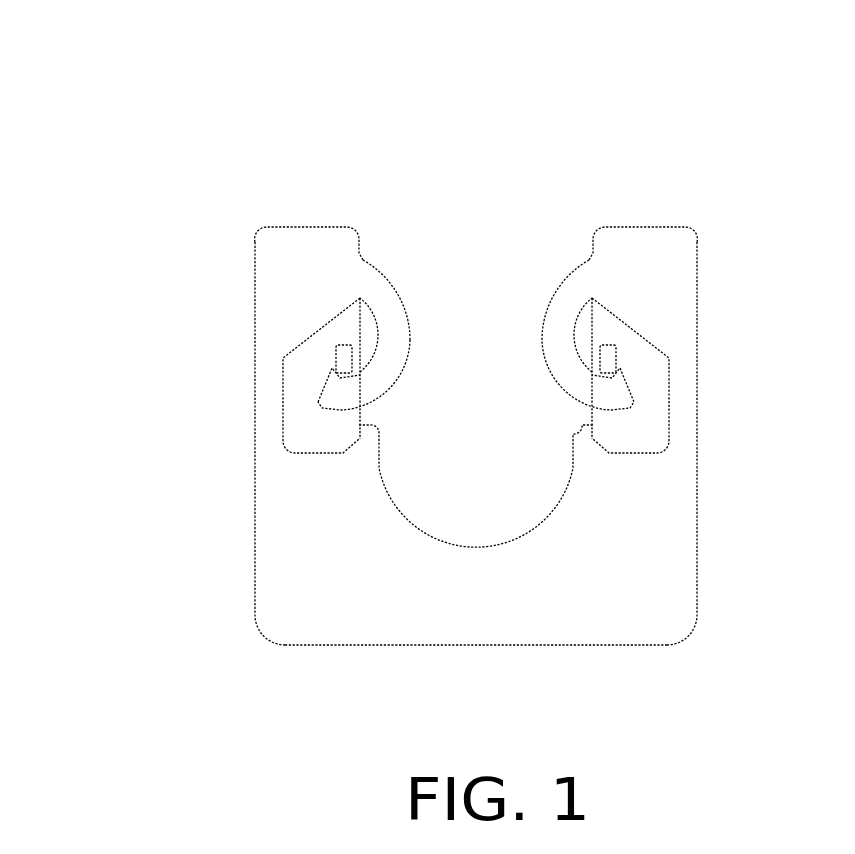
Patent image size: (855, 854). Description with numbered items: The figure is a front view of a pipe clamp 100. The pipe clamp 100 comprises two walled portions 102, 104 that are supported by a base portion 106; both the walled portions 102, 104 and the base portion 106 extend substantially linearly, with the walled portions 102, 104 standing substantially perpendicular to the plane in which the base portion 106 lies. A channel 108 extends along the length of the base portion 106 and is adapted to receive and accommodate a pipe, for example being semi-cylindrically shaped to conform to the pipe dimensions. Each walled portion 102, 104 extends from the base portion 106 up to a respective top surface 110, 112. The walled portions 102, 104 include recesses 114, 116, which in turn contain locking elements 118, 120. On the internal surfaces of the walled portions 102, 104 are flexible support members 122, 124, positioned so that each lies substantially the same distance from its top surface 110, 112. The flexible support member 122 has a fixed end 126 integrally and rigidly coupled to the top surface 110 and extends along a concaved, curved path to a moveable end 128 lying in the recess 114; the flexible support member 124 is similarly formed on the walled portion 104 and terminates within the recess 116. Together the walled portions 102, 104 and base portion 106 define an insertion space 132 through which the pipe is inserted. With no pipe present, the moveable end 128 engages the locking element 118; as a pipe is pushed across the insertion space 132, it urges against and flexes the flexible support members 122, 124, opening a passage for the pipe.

The pipe clamp 100 is at (141, 61).
The walled portion 102 is at (255, 287).
The walled portion 104 is at (697, 472).
The base portion 106 is at (597, 645).
The channel 108 is at (503, 542).
The top surface 110 is at (310, 228).
The top surface 112 is at (636, 228).
The recess 114 is at (293, 375).
The recess 116 is at (645, 377).
The locking element 118 is at (335, 350).
The locking element 120 is at (614, 352).
The flexible support member 122 is at (408, 313).
The flexible support member 124 is at (550, 297).
The fixed end 126 is at (363, 257).
The moveable end 128 is at (316, 403).
The insertion space 132 is at (483, 343).